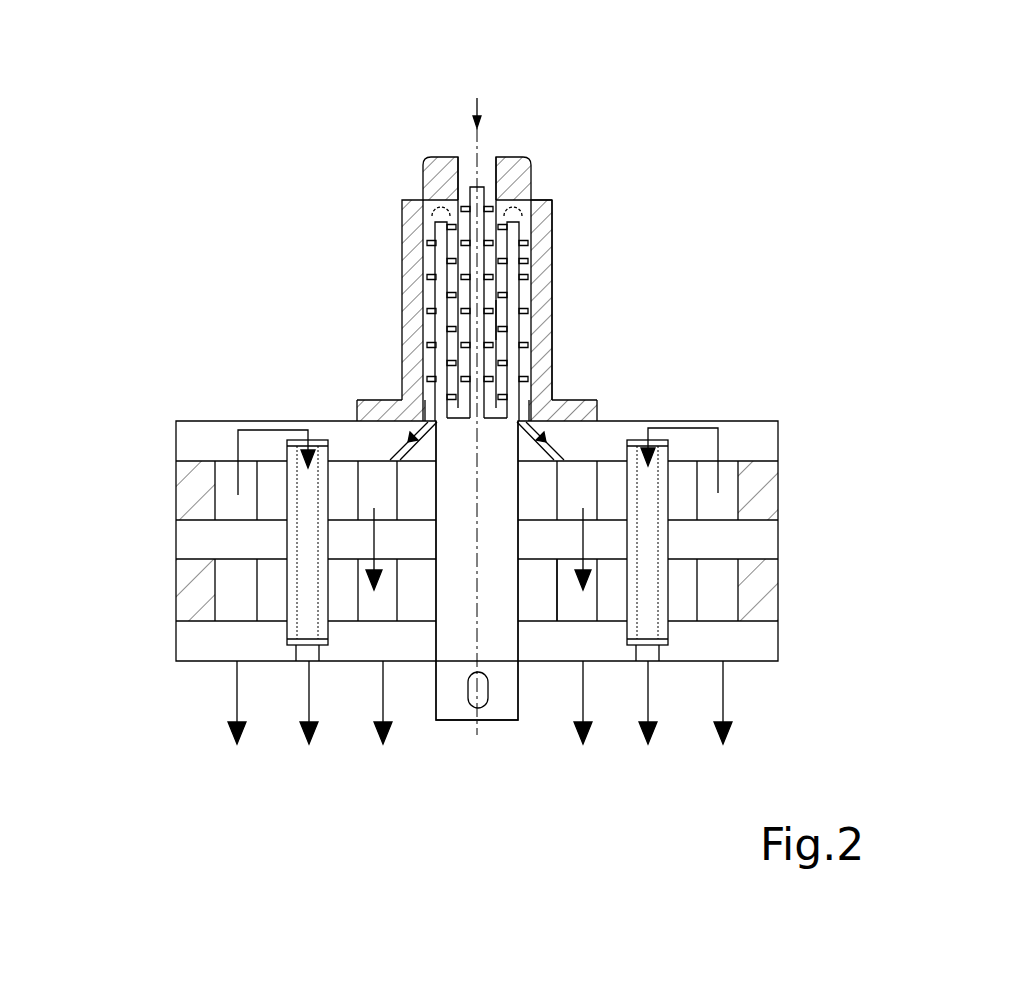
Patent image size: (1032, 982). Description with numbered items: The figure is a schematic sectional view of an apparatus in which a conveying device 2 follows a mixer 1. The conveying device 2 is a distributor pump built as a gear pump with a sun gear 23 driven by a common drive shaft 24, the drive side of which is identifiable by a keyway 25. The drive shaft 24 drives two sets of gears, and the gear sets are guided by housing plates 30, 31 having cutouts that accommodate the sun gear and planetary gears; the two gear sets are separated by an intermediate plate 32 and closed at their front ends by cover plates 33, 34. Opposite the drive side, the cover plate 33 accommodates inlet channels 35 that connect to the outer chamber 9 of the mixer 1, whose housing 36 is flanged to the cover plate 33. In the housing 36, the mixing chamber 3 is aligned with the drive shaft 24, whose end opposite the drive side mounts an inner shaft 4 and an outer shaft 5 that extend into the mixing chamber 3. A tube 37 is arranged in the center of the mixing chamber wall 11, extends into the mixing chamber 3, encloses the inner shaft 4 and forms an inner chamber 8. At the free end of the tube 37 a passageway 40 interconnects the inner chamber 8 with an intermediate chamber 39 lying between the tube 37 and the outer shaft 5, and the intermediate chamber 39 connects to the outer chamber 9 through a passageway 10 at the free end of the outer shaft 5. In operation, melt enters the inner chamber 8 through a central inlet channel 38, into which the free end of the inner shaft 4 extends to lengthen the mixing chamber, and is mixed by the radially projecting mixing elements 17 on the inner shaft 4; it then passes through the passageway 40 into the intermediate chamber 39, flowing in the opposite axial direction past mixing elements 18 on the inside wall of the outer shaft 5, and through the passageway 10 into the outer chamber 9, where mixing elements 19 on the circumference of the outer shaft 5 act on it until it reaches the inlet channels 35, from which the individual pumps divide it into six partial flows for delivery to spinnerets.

The mixer 1 is at (334, 289).
The conveying device 2 is at (132, 537).
The mixing chamber 3 is at (425, 205).
The inner shaft 4 is at (436, 199).
The outer shaft 5 is at (510, 320).
The inner chamber 8 is at (492, 290).
The outer chamber 9 is at (525, 262).
The passageway 10 is at (437, 222).
The mixing chamber wall 11 is at (524, 200).
The mixing elements 17 is at (466, 312).
The mixing elements 18 is at (468, 245).
The mixing elements 19 is at (453, 364).
The sun gear 23 is at (543, 587).
The common drive shaft 24 is at (502, 712).
The keyway 25 is at (470, 705).
The housing plate 30 is at (768, 484).
The housing plate 31 is at (768, 588).
The intermediate plate 32 is at (760, 537).
The cover plate 33 is at (762, 433).
The cover plate 34 is at (765, 640).
The inlet channels 35 is at (422, 428).
The housing 36 is at (554, 199).
The tube 37 is at (548, 200).
The central inlet channel 38 is at (474, 168).
The intermediate chamber 39 is at (503, 238).
The passageway 40 is at (505, 415).